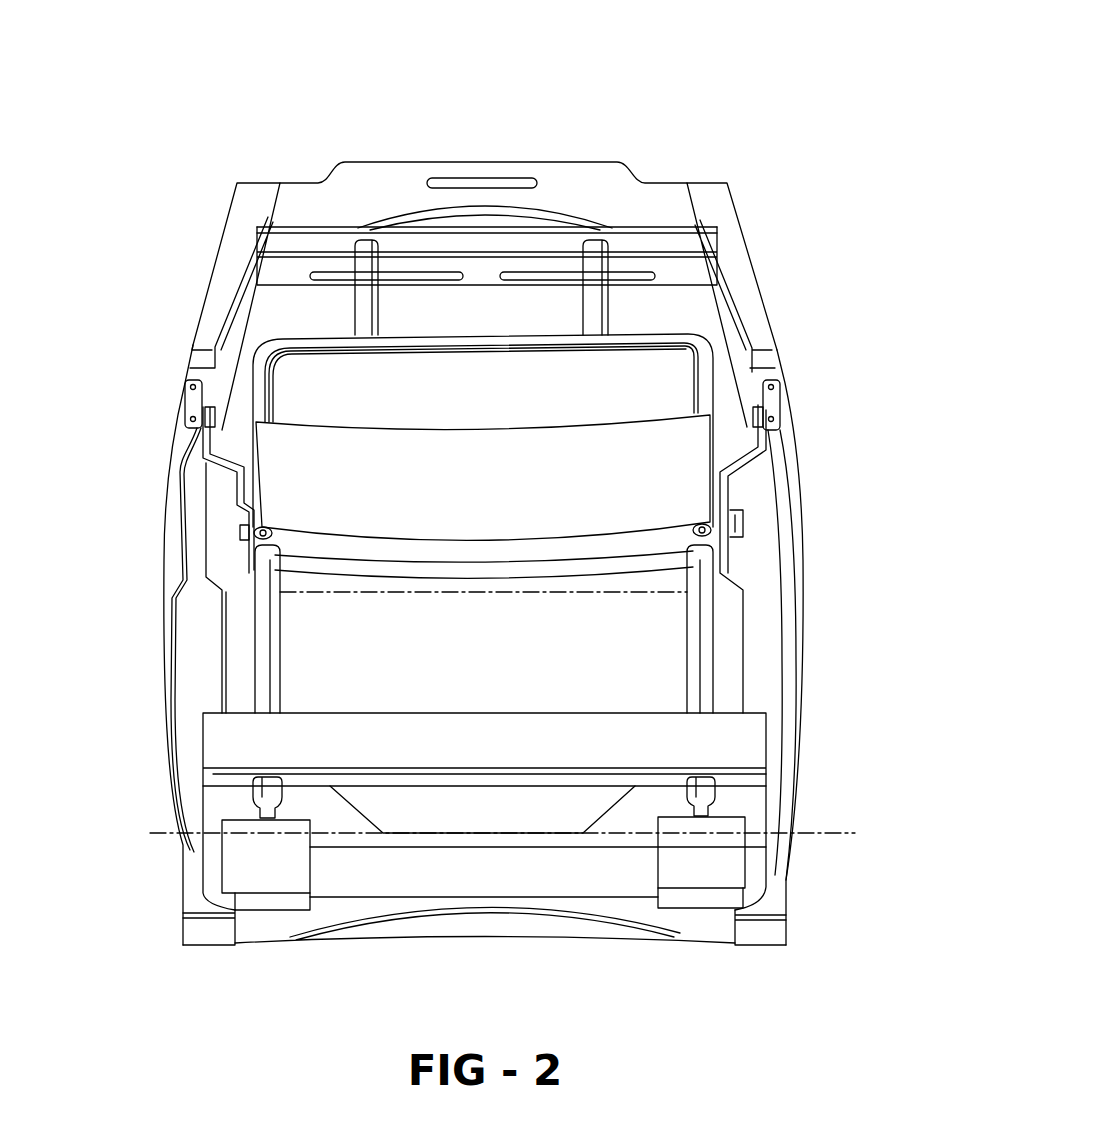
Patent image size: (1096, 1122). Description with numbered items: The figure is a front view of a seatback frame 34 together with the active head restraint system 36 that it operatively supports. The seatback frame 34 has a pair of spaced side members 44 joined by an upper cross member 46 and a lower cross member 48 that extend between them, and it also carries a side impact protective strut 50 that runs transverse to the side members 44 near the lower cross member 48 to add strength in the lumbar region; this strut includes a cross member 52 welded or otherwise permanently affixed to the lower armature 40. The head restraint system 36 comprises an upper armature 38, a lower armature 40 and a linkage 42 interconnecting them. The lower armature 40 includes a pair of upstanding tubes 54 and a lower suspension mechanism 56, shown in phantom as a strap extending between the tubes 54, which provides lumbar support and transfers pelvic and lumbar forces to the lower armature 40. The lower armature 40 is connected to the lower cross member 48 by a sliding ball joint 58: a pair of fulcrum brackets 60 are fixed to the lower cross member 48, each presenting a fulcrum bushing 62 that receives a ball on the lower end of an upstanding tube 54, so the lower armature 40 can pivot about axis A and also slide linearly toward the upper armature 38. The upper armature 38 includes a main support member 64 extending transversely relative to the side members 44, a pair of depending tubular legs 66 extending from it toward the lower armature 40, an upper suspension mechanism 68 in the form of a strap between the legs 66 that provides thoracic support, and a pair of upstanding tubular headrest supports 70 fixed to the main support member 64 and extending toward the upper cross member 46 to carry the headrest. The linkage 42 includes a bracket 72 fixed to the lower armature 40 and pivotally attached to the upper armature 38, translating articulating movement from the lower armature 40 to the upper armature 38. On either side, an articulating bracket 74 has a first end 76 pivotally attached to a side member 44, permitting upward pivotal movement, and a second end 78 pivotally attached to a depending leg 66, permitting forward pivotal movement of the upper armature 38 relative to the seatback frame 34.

The seatback frame 34 is at (692, 140).
The upper cross member 46 is at (500, 170).
The upper armature 38 is at (245, 332).
The active head restraint system 36 is at (724, 336).
The upstanding tubular headrest supports 70 is at (360, 255).
The main support member 64 is at (455, 337).
The depending tubular legs 66 is at (262, 378).
The upper suspension mechanism 68 is at (444, 440).
The bracket 72 is at (725, 550).
The lower suspension mechanism 56 is at (405, 595).
The upstanding tubes 54 is at (268, 632).
The side impact protective strut 50 is at (537, 708).
The cross member 52 is at (425, 730).
The sliding ball joint 58 is at (752, 803).
The fulcrum bushing 62 is at (258, 814).
The fulcrum brackets 60 is at (235, 853).
The lower cross member 48 is at (664, 928).
The side members 44 is at (178, 648).
The lower armature 40 is at (226, 608).
The linkage 42 is at (237, 548).
The articulating brackets 74 is at (757, 455).
The second end 78 is at (238, 530).
The first end 76 is at (183, 407).